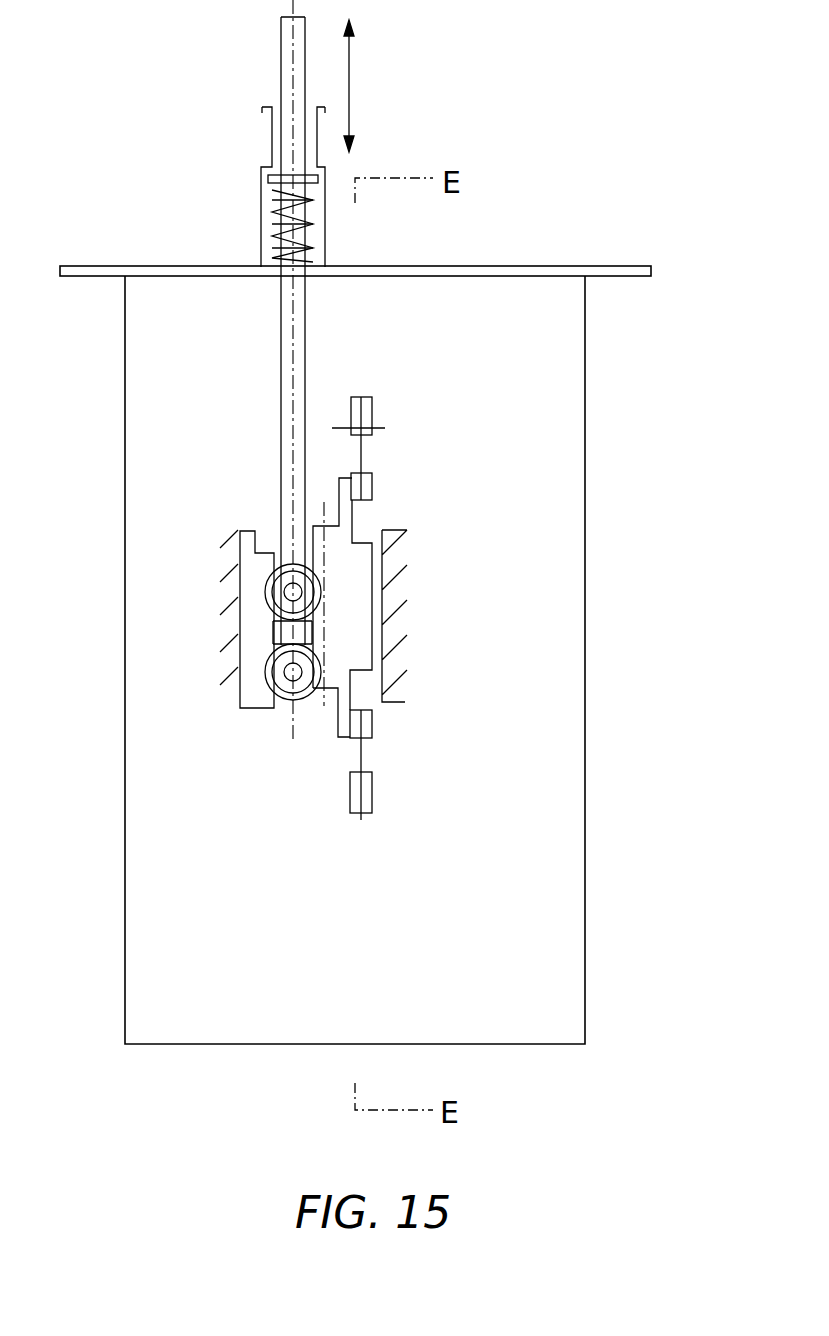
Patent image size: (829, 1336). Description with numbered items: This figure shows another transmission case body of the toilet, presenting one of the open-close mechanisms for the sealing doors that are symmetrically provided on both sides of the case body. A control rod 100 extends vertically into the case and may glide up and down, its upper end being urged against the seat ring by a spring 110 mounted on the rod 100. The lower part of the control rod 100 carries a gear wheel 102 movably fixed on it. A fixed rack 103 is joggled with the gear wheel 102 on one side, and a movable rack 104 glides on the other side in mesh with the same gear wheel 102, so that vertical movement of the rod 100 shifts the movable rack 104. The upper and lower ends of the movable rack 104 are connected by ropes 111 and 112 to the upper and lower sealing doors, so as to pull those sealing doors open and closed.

The control rod 100 is at (280, 92).
The spring 110 is at (262, 222).
The gear wheel 102 is at (270, 582).
The fixed rack 103 is at (253, 623).
The movable rack 104 is at (346, 624).
The rope 111 is at (360, 455).
The rope 112 is at (362, 758).